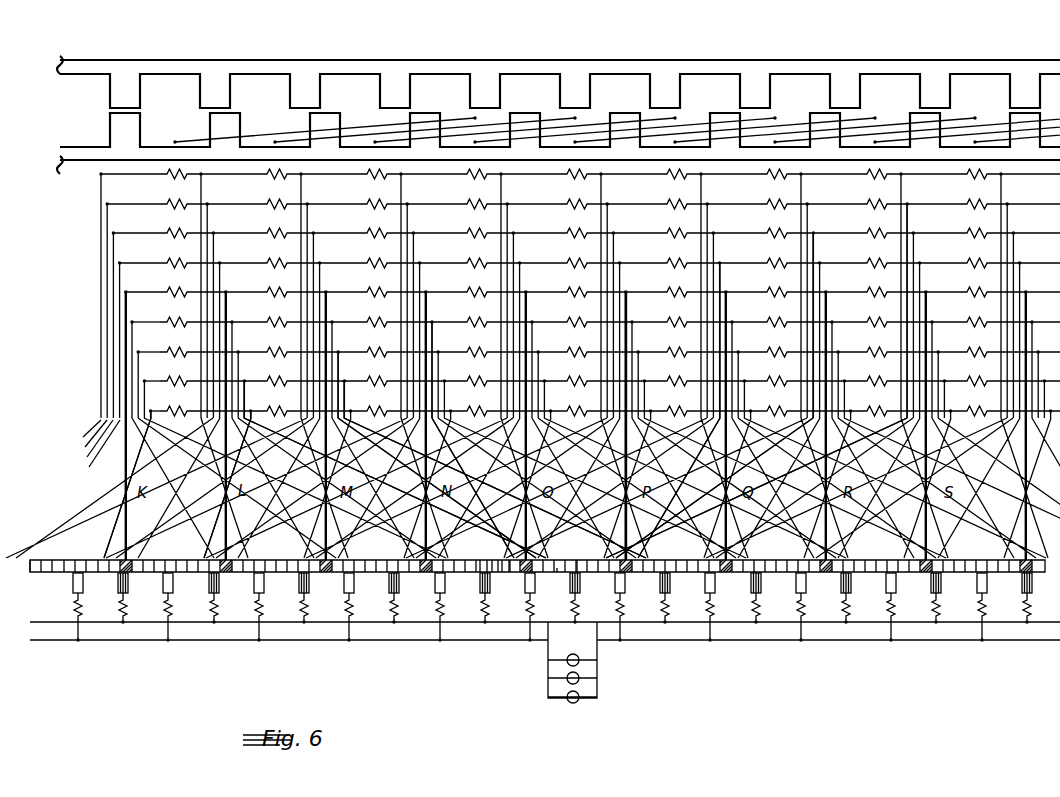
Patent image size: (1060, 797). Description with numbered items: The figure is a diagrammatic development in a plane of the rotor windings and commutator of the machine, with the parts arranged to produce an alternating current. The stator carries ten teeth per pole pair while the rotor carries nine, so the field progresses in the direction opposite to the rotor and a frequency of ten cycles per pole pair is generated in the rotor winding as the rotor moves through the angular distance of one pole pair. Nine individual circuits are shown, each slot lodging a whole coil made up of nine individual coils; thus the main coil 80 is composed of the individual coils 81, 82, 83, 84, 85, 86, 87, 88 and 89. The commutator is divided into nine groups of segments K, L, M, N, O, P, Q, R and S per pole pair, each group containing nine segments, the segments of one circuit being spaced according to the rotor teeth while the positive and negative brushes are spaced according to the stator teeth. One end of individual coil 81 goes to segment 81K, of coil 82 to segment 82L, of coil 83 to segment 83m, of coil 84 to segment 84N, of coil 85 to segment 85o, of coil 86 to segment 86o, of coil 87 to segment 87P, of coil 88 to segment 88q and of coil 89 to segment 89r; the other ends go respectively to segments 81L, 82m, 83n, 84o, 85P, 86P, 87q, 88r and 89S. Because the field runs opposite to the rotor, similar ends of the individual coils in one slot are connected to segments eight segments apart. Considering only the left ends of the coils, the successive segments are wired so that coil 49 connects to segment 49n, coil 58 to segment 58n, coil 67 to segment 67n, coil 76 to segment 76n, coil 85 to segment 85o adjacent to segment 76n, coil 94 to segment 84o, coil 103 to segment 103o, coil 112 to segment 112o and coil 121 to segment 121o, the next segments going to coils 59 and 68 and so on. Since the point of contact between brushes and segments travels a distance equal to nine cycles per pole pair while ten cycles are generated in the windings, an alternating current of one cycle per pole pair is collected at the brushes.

The coil 80 is at (580, 140).
The individual coil 81 is at (534, 176).
The individual coil 82 is at (534, 206).
The individual coil 83 is at (534, 235).
The individual coil 84 is at (534, 265).
The individual coil 85 is at (534, 294).
The individual coil 86 is at (534, 324).
The individual coil 87 is at (534, 354).
The individual coil 88 is at (576, 379).
The individual coil 89 is at (574, 409).
The coil 49 is at (152, 415).
The coil 58 is at (246, 387).
The coil 59 is at (253, 413).
The coil 67 is at (340, 353).
The coil 68 is at (346, 383).
The coil 76 is at (434, 323).
The coil 94 is at (628, 292).
The coil 103 is at (722, 264).
The coil 112 is at (816, 234).
The coil 121 is at (935, 202).
The commutator segment 81K is at (167, 572).
The commutator segment 82L is at (262, 568).
The commutator segment 81L is at (268, 573).
The commutator segment 83m is at (346, 571).
The commutator segment 82m is at (392, 571).
The commutator segment 84N is at (432, 571).
The commutator segment 83n is at (475, 571).
The commutator segment 85o is at (517, 568).
The commutator segment 84o is at (533, 569).
The commutator segment 103o is at (557, 569).
The commutator segment 86o is at (615, 569).
The commutator segment 85P is at (627, 569).
The commutator segment 87P is at (706, 571).
The commutator segment 86P is at (745, 571).
The commutator segment 88q is at (795, 571).
The commutator segment 87q is at (838, 571).
The commutator segment 89r is at (883, 571).
The commutator segment 88r is at (928, 571).
The commutator segment 89S is at (978, 571).
The commutator segment 112o is at (572, 662).
The commutator segment 49n is at (480, 566).
The commutator segment 58n is at (492, 568).
The commutator segment 67n is at (502, 568).
The commutator segment 76n is at (510, 568).
The commutator segment 121o is at (577, 569).